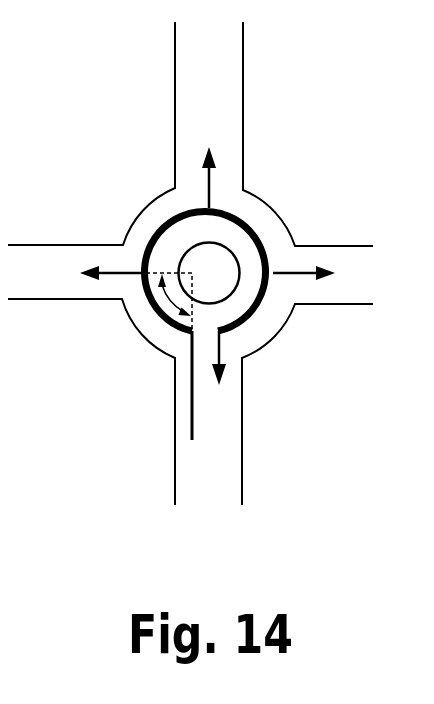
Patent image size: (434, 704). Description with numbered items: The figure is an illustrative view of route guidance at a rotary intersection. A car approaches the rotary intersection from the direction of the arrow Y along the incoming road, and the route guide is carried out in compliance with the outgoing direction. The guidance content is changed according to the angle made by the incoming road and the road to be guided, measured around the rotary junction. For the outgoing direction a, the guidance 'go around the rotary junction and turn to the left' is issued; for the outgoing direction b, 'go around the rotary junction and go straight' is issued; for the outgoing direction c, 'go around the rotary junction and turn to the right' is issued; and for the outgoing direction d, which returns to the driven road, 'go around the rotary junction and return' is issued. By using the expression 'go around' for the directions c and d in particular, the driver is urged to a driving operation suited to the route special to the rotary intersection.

The outgoing direction a is at (102, 270).
The outgoing direction b is at (209, 155).
The outgoing direction c is at (316, 270).
The outgoing direction d is at (219, 378).
The arrow Y is at (194, 407).